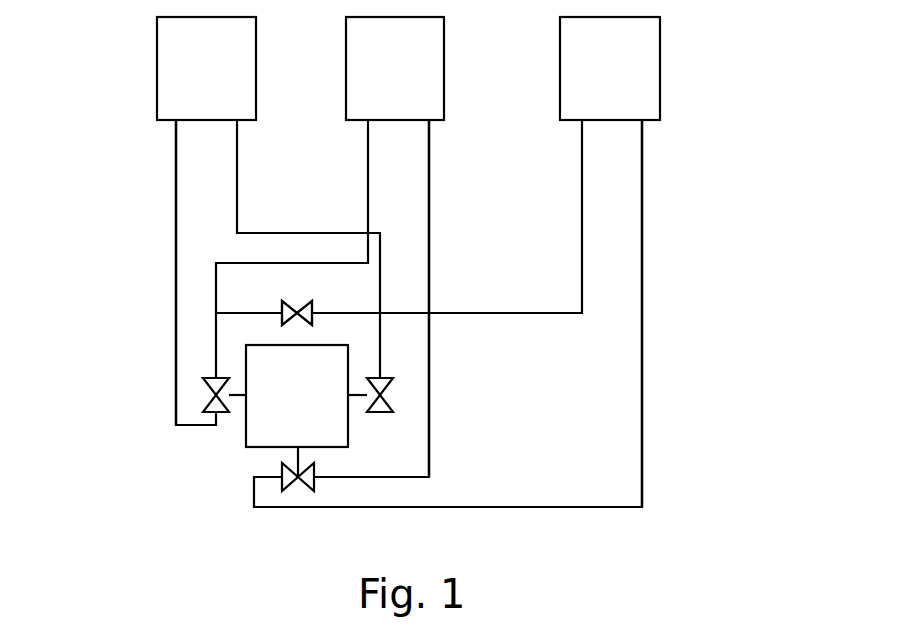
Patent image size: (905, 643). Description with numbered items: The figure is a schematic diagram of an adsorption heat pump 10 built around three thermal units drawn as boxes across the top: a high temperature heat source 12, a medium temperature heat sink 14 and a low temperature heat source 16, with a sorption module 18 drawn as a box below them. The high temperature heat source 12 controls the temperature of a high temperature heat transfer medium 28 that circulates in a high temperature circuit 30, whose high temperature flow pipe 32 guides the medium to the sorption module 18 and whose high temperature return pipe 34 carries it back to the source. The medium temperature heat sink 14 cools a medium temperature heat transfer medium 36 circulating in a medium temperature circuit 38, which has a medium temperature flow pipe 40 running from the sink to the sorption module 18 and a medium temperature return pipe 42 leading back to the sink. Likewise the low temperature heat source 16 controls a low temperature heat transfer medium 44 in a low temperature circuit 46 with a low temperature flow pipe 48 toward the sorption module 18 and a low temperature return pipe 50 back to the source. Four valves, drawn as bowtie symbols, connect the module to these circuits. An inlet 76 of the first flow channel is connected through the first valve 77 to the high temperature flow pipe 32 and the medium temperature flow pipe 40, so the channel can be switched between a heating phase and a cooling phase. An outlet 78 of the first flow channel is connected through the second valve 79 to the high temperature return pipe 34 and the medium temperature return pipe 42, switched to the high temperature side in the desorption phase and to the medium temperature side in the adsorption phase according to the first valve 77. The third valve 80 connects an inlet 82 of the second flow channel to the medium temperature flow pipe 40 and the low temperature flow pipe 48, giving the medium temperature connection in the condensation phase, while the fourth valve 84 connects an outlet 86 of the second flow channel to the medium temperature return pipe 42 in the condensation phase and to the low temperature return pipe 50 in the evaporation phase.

The adsorption heat pump 10 is at (693, 131).
The high temperature heat source 12 is at (222, 84).
The medium temperature heat sink 14 is at (410, 84).
The low temperature heat source 16 is at (625, 84).
The sorption module 18 is at (319, 414).
The high temperature heat transfer medium 28 is at (170, 283).
The high temperature circuit 30 is at (158, 155).
The high temperature flow pipe 32 is at (176, 195).
The high temperature return pipe 34 is at (237, 132).
The medium temperature heat transfer medium 36 is at (435, 233).
The medium temperature circuit 38 is at (460, 131).
The medium temperature flow pipe 40 is at (368, 175).
The medium temperature return pipe 42 is at (429, 155).
The low temperature heat transfer medium 44 is at (651, 345).
The low temperature circuit 46 is at (674, 173).
The low temperature flow pipe 48 is at (582, 198).
The low temperature return pipe 50 is at (642, 222).
The inlet of the first flow channel 76 is at (240, 398).
The first valve 77 is at (205, 383).
The outlet of the first flow channel 78 is at (362, 400).
The second valve 79 is at (392, 405).
The third valve 80 is at (298, 311).
The inlet of the second flow channel 82 is at (300, 316).
The fourth valve 84 is at (310, 490).
The outlet of the second flow channel 86 is at (292, 452).